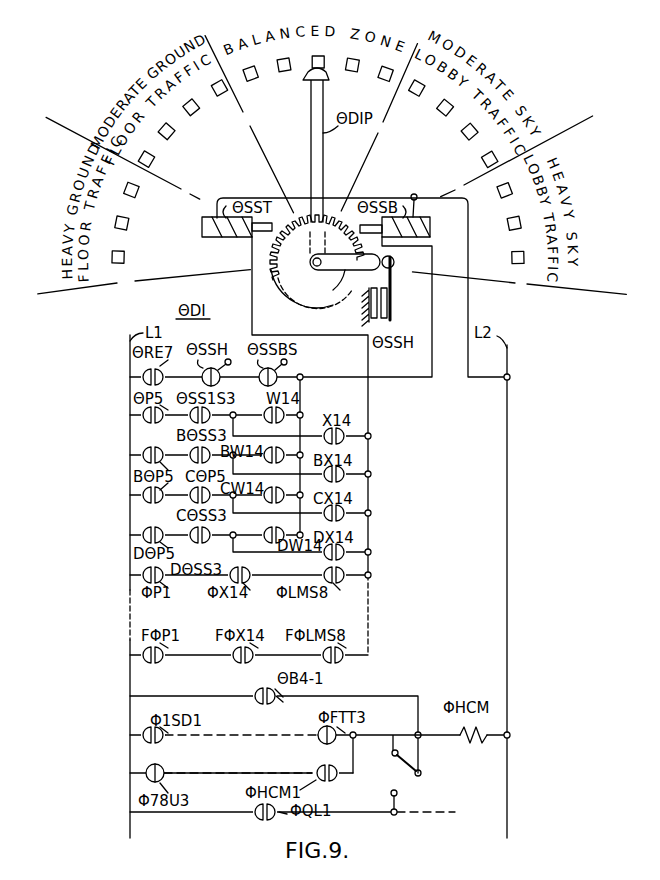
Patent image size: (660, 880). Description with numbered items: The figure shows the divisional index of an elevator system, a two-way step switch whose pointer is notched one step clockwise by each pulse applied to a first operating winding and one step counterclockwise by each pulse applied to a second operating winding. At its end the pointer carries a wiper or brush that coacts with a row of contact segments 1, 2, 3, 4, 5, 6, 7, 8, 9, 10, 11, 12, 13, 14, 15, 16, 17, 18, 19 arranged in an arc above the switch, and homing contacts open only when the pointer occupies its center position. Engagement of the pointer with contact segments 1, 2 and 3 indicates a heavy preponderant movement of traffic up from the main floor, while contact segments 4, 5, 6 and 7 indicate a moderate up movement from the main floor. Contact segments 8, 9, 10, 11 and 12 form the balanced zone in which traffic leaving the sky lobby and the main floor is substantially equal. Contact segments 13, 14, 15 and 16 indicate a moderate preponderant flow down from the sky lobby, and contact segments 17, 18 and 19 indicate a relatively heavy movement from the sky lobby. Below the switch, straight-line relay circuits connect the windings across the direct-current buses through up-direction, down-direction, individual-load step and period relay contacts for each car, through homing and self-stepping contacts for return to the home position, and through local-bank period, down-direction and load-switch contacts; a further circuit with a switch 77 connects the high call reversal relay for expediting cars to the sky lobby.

The contact segment 1 is at (127, 258).
The contact segment 2 is at (130, 225).
The contact segment 3 is at (139, 193).
The contact segment 4 is at (152, 164).
The contact segment 5 is at (171, 137).
The contact segment 6 is at (195, 114).
The contact segment 7 is at (222, 96).
The contact segment 8 is at (252, 82).
The contact segment 9 is at (284, 75).
The contact segment 10 is at (318, 62).
The contact segment 11 is at (349, 75).
The contact segment 12 is at (381, 83).
The contact segment 13 is at (411, 96).
The contact segment 14 is at (438, 114).
The contact segment 15 is at (462, 137).
The contact segment 16 is at (481, 164).
The contact segment 17 is at (495, 194).
The contact segment 18 is at (503, 225).
The contact segment 19 is at (507, 258).
The switch 77 is at (400, 760).